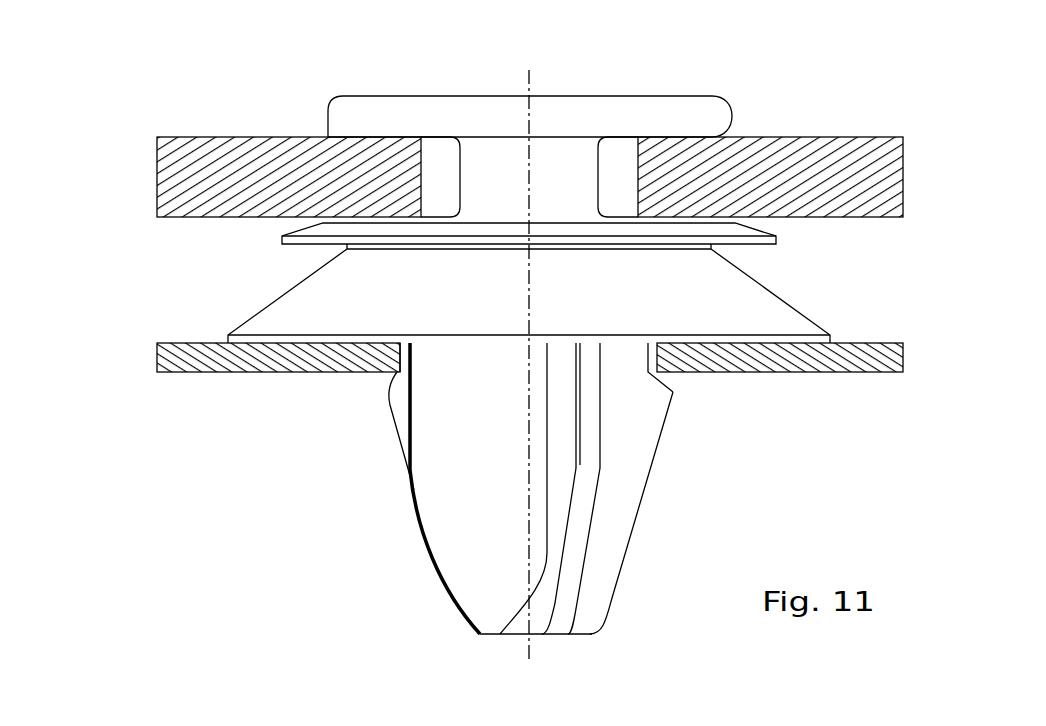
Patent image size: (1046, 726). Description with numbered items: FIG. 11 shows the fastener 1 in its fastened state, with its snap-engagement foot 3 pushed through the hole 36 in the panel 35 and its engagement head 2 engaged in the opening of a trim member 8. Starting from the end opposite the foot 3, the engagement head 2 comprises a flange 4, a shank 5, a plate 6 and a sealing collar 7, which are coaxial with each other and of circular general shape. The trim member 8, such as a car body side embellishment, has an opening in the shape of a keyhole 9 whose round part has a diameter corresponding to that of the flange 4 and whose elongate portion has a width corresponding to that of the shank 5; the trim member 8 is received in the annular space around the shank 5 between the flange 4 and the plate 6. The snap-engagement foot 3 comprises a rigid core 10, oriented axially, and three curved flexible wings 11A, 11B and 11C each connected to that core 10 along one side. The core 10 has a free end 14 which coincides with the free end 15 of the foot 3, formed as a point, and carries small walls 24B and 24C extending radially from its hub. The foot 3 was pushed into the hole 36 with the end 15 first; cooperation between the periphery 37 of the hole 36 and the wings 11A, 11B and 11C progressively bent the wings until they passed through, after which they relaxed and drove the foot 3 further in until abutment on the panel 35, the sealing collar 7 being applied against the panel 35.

The fastener 1 is at (108, 255).
The engagement head 2 is at (315, 105).
The snap-engagement foot 3 is at (325, 527).
The flange 4 is at (718, 102).
The shank 5 is at (495, 152).
The plate 6 is at (281, 239).
The sealing collar 7 is at (262, 322).
The trim member 8 is at (870, 137).
The keyhole 9 is at (622, 168).
The rigid core 10 is at (555, 570).
The curved flexible wing 11A is at (399, 392).
The curved flexible wing 11B is at (623, 450).
The curved flexible wing 11C is at (482, 580).
The free end of the core 14 is at (548, 636).
The free end of the snap-engagement foot 15 is at (513, 650).
The small wall 24B is at (587, 517).
The small wall 24C is at (436, 570).
The panel 35 is at (887, 342).
The hole 36 is at (398, 353).
The periphery of the hole 37 is at (649, 343).